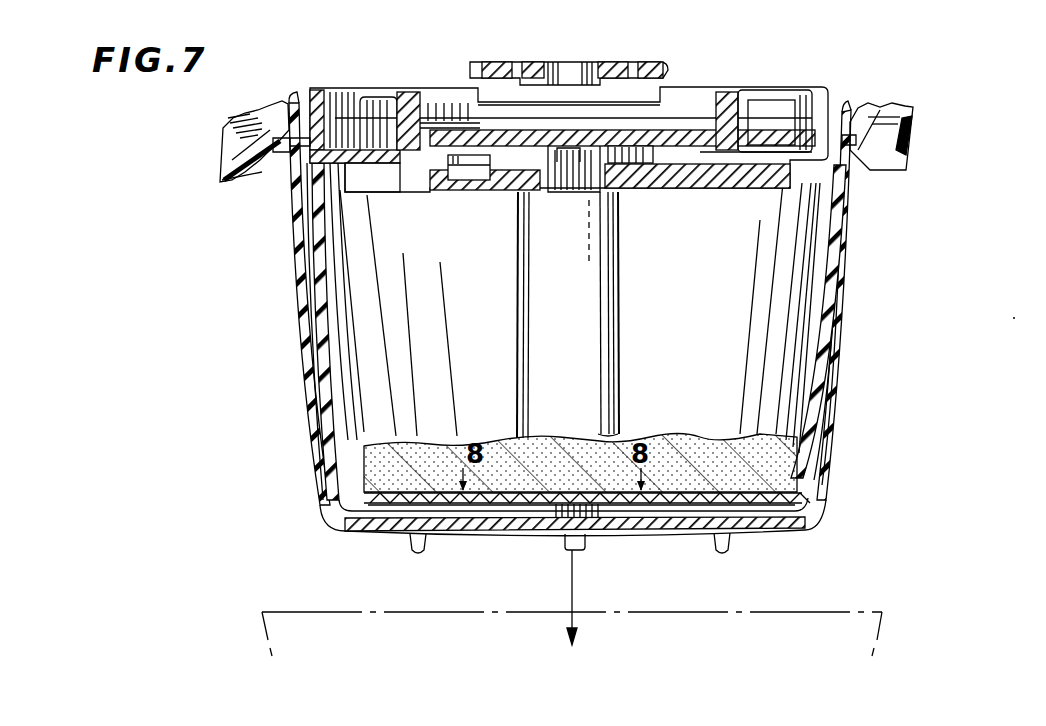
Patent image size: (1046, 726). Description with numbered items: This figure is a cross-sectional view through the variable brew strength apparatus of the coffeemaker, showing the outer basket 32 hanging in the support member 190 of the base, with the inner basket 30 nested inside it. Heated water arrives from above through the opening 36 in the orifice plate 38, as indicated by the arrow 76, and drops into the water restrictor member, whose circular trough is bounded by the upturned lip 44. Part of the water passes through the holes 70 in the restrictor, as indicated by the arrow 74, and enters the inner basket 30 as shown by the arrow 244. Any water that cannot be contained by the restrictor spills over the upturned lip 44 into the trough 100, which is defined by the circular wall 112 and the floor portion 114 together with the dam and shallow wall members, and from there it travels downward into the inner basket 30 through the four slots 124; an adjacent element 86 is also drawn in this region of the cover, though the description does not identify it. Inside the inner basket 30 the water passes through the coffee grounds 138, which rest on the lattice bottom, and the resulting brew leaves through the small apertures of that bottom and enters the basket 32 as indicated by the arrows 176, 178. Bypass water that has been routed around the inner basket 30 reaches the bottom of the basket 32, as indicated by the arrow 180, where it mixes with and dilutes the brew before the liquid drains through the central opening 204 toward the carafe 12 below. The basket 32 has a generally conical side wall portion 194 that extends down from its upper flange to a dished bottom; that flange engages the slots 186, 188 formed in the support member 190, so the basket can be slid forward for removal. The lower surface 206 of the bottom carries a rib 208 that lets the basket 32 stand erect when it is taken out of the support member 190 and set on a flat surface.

The carafe 12 is at (322, 611).
The inner basket 30 is at (350, 385).
The basket 32 is at (298, 358).
The opening 36 is at (597, 62).
The orifice plate 38 is at (668, 63).
The upturned lip 44 is at (742, 93).
The holes 70 is at (513, 165).
The arrow 74 is at (512, 163).
The arrow 76 is at (548, 132).
The cylindrical post 86 is at (719, 96).
The trough 100 is at (390, 186).
The circular wall 112 is at (372, 180).
The floor portion 114 is at (417, 193).
The slots 124 is at (655, 172).
The coffee grounds 138 is at (720, 434).
The arrow 176 is at (400, 486).
The arrow 178 is at (600, 432).
The arrow 180 is at (808, 509).
The slot 186 is at (886, 171).
The slot 188 is at (237, 182).
The support member 190 is at (224, 133).
The side wall portion 194 is at (832, 423).
The central opening 204 is at (581, 551).
The lower surface 206 is at (767, 533).
The rib 208 is at (423, 549).
The arrow 244 is at (655, 230).